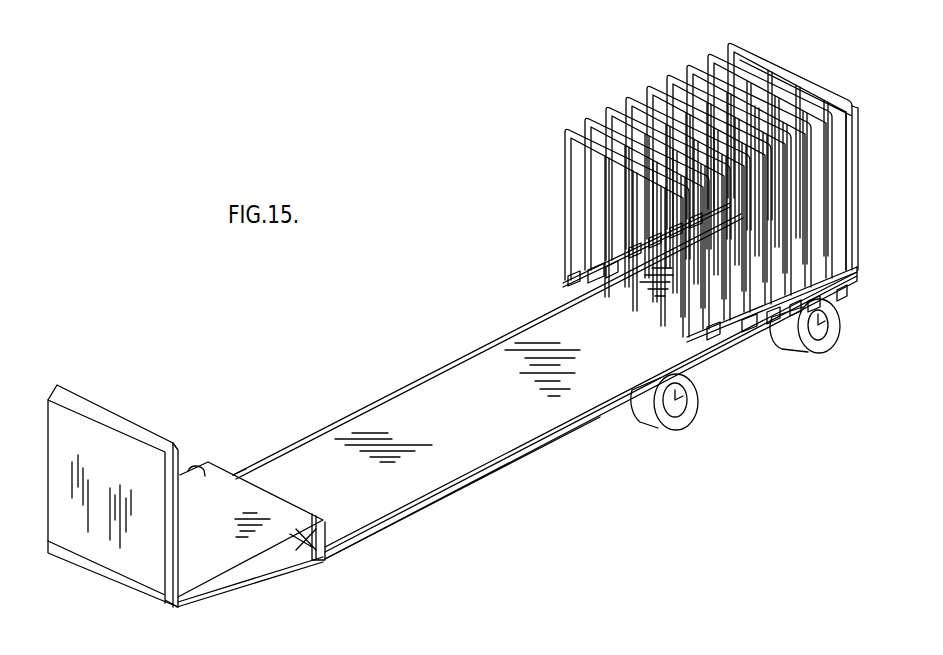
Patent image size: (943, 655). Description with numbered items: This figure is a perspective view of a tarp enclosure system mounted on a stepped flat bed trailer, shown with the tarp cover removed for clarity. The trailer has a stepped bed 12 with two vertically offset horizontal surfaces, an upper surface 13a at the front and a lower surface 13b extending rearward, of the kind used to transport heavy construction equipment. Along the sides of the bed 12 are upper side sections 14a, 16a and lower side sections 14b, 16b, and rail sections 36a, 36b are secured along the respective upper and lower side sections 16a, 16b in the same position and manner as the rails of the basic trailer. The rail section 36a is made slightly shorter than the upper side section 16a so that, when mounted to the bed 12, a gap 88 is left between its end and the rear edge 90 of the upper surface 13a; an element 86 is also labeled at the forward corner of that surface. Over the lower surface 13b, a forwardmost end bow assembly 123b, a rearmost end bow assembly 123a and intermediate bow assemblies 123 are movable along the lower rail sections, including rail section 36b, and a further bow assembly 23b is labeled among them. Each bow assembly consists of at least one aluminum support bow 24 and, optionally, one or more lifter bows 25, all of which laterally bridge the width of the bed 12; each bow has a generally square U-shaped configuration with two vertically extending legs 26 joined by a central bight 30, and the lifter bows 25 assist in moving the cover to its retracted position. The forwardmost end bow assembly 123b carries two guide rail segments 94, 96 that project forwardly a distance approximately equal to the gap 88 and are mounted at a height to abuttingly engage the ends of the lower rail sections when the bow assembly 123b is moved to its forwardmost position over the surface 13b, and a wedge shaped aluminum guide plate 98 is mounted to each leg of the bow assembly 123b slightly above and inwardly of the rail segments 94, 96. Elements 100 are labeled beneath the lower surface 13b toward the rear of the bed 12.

The bed 12 is at (378, 408).
The upper horizontal surface 13a is at (217, 543).
The lower horizontal surface 13b is at (488, 415).
The upper side section 14a is at (183, 472).
The lower side section 14b is at (433, 371).
The upper side section 16a is at (302, 549).
The lower side section 16b is at (542, 441).
The rack frame bars 23b is at (555, 167).
The support bow 24 is at (557, 215).
The lifter bow 25 is at (585, 107).
The legs 26 is at (855, 133).
The central bight 30 is at (806, 81).
The rail section 36a is at (226, 581).
The rail section 36b is at (393, 528).
The hinge 86 is at (203, 486).
The gap 88 is at (326, 509).
The rear edge 90 is at (262, 487).
The guide rail segment 94 is at (590, 279).
The guide rail segment 96 is at (722, 349).
The guide plate 98 is at (612, 278).
The wheels 100 is at (664, 370).
The intermediate bow assemblies 123 is at (689, 44).
The end bow assembly 123a is at (757, 63).
The forwardmost end bow assembly 123b is at (603, 99).